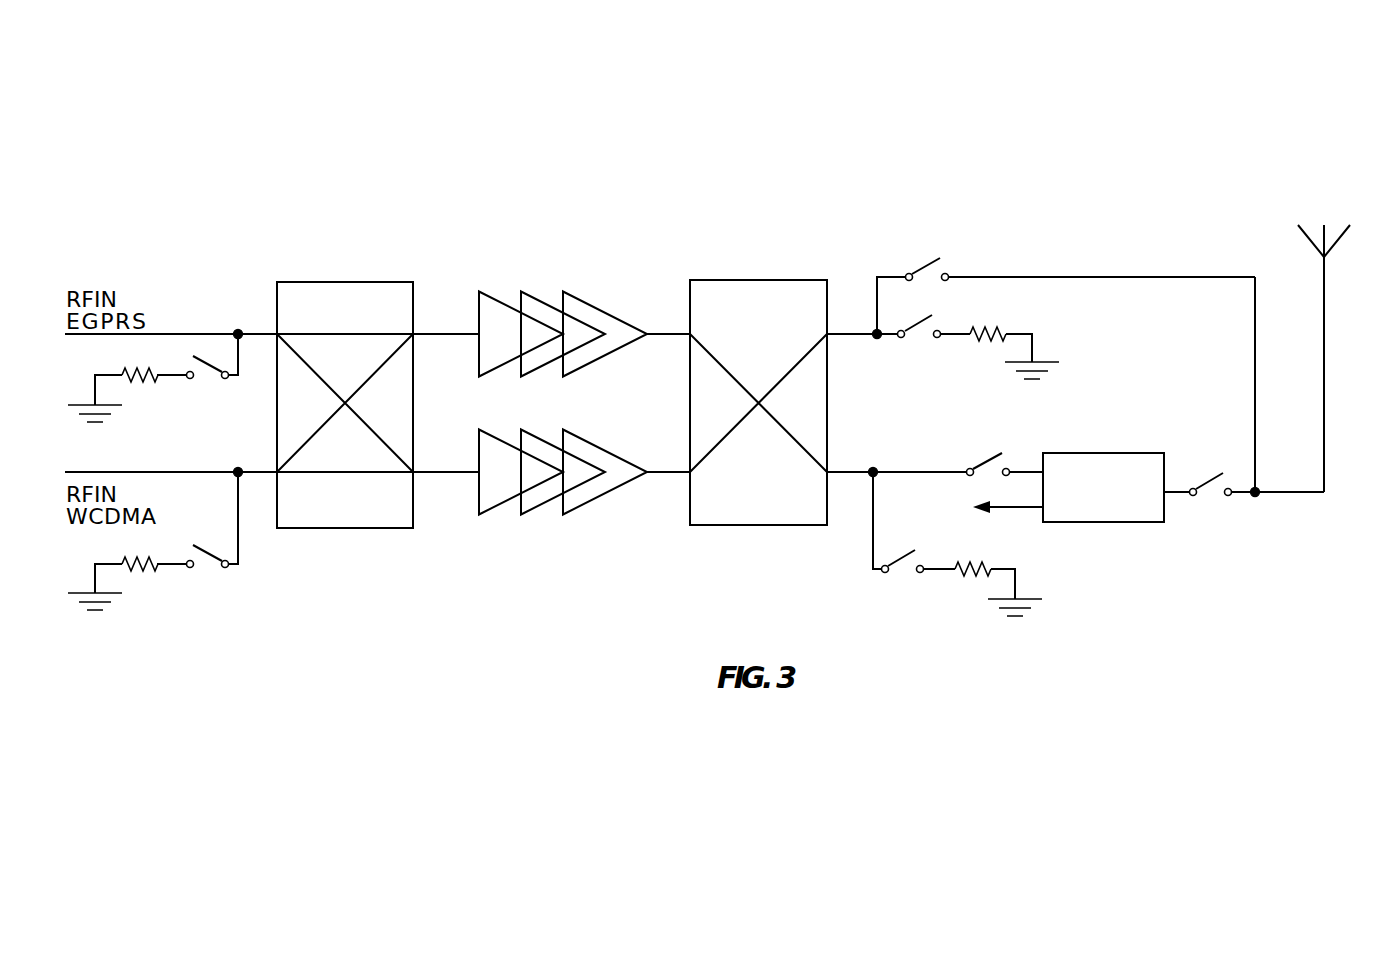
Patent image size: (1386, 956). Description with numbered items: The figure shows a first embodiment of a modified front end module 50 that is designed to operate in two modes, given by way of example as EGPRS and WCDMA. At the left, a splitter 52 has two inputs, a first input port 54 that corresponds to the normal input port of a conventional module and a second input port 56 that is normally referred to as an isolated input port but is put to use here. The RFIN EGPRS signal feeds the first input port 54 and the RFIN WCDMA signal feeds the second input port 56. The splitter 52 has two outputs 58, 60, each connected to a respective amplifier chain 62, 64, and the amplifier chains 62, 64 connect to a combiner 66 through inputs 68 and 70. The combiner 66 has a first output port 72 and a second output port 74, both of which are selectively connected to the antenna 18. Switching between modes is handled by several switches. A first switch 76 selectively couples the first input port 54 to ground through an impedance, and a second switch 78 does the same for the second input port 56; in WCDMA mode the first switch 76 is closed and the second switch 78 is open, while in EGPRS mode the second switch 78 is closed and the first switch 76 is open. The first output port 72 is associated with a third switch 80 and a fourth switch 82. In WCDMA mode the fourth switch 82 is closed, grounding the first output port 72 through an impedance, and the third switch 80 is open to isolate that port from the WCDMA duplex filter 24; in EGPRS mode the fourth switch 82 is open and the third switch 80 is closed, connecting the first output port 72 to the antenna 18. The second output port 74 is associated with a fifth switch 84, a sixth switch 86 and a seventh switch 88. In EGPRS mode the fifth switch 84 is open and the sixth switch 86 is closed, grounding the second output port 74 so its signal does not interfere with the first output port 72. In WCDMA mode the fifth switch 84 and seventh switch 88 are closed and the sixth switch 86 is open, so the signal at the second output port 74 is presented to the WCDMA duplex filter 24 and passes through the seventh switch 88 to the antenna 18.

The front end module 50 is at (922, 146).
The antenna 18 is at (1360, 195).
The WCDMA duplex filter 24 is at (1112, 522).
The splitter 52 is at (370, 282).
The first input port 54 is at (277, 334).
The second input port 56 is at (277, 472).
The output 58 is at (413, 334).
The output 60 is at (413, 472).
The amplifier chain 62 is at (589, 300).
The amplifier chain 64 is at (583, 505).
The combiner 66 is at (783, 280).
The input 68 is at (690, 334).
The input 70 is at (690, 472).
The first output port 72 is at (827, 334).
The second output port 74 is at (827, 472).
The first switch 76 is at (212, 369).
The second switch 78 is at (212, 558).
The third switch 80 is at (924, 268).
The fourth switch 82 is at (912, 330).
The fifth switch 84 is at (986, 462).
The sixth switch 86 is at (896, 566).
The seventh switch 88 is at (1210, 482).